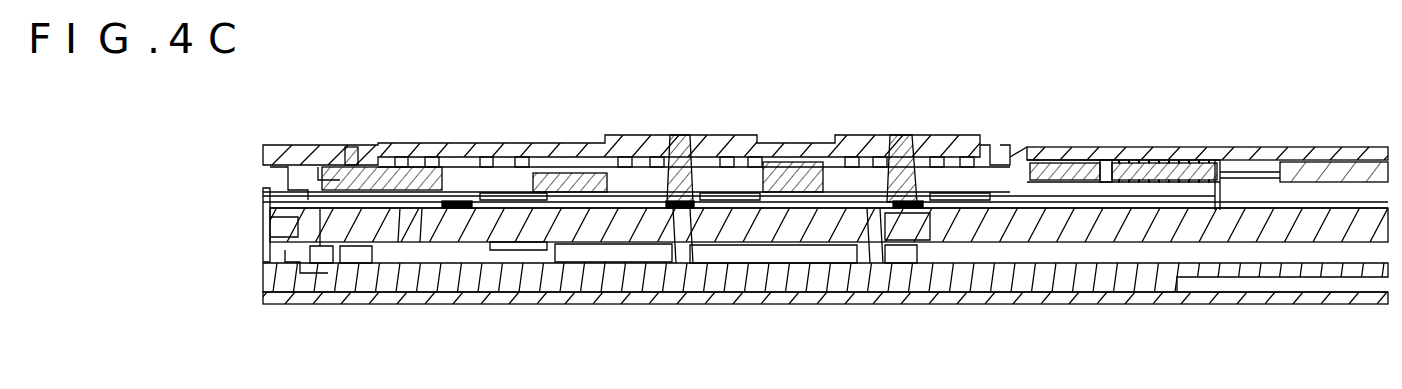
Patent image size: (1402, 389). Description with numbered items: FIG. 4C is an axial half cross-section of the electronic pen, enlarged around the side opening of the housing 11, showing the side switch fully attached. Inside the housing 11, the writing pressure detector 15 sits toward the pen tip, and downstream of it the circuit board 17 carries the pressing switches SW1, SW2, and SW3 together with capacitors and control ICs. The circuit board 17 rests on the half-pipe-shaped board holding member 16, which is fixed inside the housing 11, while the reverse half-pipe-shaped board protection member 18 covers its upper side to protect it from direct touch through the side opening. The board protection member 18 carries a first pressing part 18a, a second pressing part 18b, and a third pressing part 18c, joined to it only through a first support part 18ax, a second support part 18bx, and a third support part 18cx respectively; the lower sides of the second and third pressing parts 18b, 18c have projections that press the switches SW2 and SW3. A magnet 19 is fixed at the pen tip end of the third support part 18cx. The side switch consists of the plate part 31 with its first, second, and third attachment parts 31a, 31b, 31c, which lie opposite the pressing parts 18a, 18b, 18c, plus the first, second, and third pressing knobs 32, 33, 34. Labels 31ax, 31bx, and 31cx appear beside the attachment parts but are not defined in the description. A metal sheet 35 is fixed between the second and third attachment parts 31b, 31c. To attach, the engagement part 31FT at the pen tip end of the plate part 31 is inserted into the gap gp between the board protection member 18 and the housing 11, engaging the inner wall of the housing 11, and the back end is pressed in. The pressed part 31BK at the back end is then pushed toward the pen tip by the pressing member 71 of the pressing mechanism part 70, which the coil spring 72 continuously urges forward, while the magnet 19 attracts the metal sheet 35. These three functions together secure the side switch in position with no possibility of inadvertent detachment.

The housing 11 is at (292, 153).
The writing pressure detector 15 is at (270, 300).
The board holding member 16 is at (1068, 280).
The circuit board 17 is at (1190, 227).
The board protection member 18 is at (320, 263).
The first pressing part 18a is at (502, 200).
The first support part 18ax is at (373, 263).
The second pressing part 18b is at (723, 192).
The second support part 18bx is at (612, 192).
The third pressing part 18c is at (943, 192).
The third support part 18cx is at (838, 192).
The magnet 19 is at (783, 192).
The plate part 31 is at (366, 165).
The engagement part 31FT is at (342, 147).
The pressed part 31BK is at (997, 150).
The first attachment part 31a is at (430, 157).
The first electrode extension 31ax is at (518, 157).
The second attachment part 31b is at (656, 157).
The second electrode extension 31bx is at (745, 157).
The third attachment part 31c is at (885, 157).
The third electrode extension 31cx is at (973, 157).
The first pressing knob 32 is at (470, 165).
The second pressing knob 33 is at (683, 133).
The third pressing knob 34 is at (919, 133).
The metal sheet 35 is at (792, 160).
The pressing mechanism part 70 is at (1165, 105).
The pressing member 71 is at (1088, 147).
The coil spring 72 is at (1142, 147).
The pressing switch SW1 is at (441, 208).
The pressing switch SW2 is at (678, 208).
The pressing switch SW3 is at (908, 208).
The gap gp is at (325, 168).